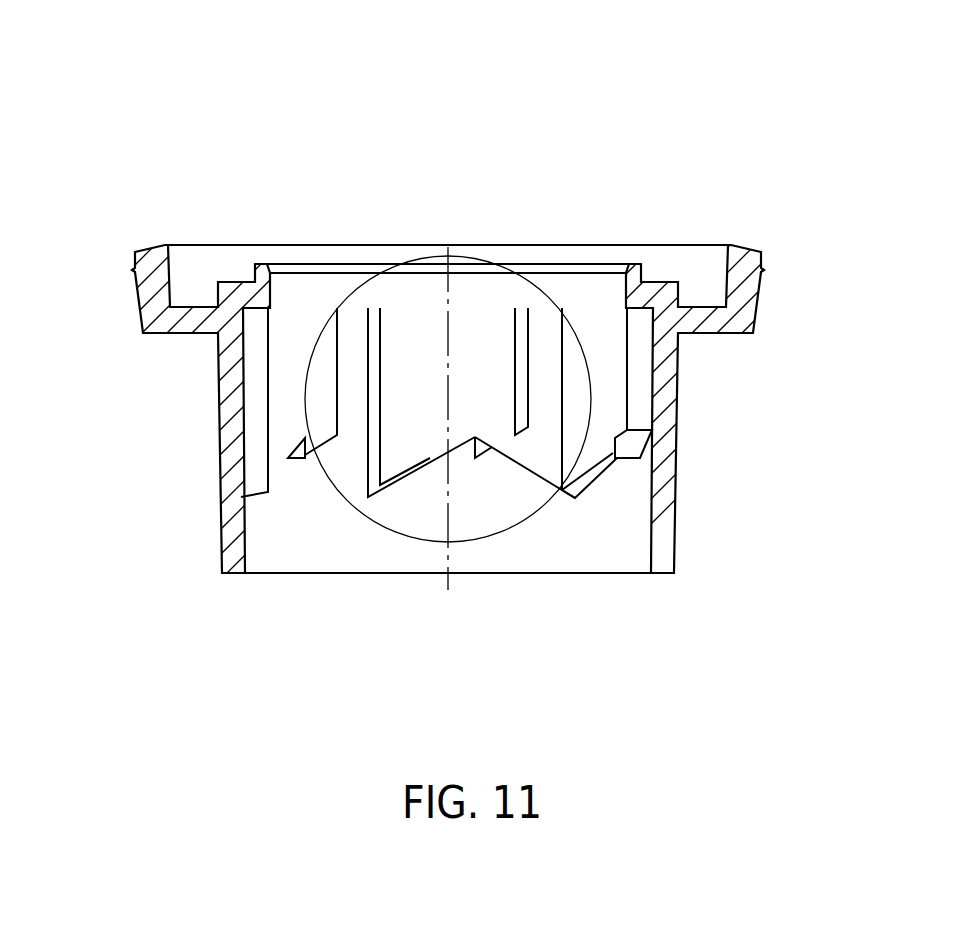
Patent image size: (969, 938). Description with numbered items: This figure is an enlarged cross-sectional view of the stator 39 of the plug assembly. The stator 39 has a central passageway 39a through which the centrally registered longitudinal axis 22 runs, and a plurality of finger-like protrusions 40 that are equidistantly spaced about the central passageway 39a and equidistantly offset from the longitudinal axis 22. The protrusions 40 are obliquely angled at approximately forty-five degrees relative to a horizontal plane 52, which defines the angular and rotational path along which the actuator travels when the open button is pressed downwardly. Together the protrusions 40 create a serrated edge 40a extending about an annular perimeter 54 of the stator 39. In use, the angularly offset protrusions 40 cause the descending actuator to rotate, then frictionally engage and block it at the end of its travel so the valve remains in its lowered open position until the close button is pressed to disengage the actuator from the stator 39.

The stator 39 is at (687, 152).
The central passageway 39a is at (422, 292).
The annular perimeter 54 is at (683, 337).
The horizontal plane 52 is at (627, 575).
The centrally registered longitudinal axis 22 is at (450, 573).
The finger-like protrusions 40 is at (597, 467).
The serrated edge 40a is at (600, 467).